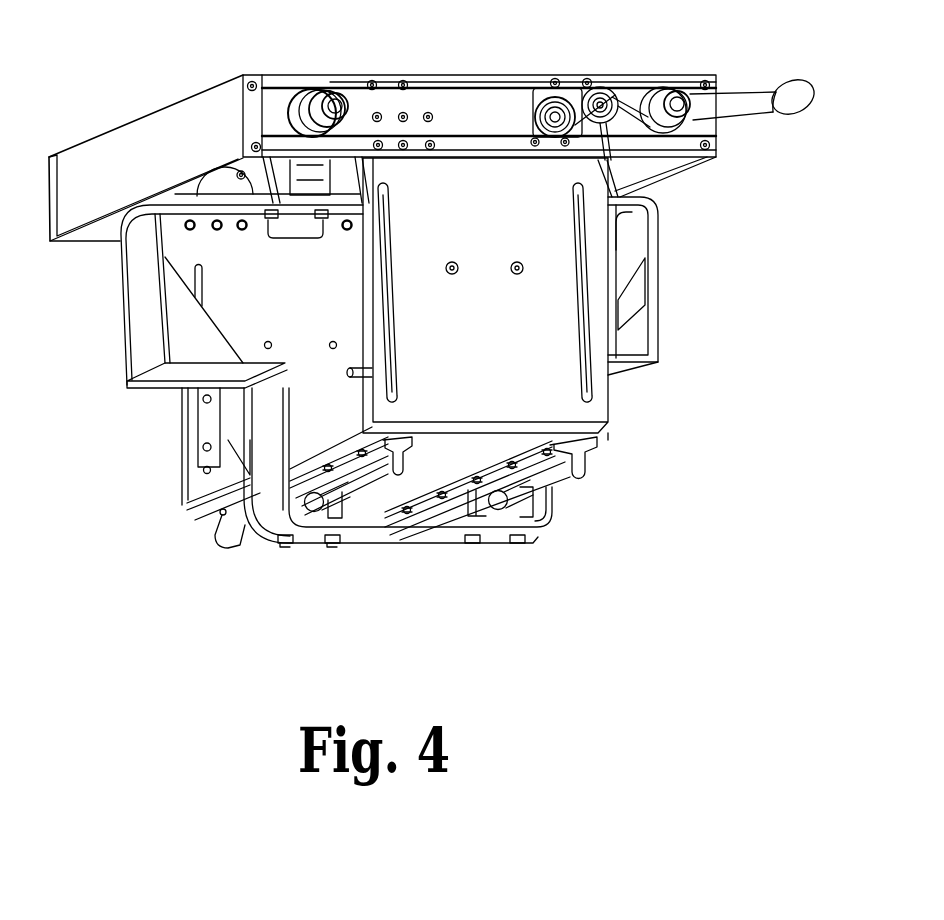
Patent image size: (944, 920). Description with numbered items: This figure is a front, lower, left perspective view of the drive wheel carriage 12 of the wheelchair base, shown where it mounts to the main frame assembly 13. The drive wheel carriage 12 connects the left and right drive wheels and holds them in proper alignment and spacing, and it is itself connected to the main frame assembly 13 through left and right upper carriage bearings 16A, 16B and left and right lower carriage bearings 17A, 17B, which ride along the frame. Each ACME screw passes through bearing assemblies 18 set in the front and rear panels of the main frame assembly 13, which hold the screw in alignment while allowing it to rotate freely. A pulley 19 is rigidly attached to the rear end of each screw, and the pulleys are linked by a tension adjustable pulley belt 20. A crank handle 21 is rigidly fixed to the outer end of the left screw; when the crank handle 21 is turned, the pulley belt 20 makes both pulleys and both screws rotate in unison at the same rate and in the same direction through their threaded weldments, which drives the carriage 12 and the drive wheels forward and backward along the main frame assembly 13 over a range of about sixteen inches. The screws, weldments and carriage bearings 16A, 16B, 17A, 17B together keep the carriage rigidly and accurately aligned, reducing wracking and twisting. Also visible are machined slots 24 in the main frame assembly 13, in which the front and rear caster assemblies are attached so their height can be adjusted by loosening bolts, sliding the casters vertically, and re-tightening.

The drive wheel carriage 12 is at (290, 543).
The main frame assembly 13 is at (102, 135).
The left upper carriage bearing 16A is at (377, 483).
The right upper carriage bearing 16B is at (578, 474).
The left lower carriage bearing 17A is at (323, 513).
The right lower carriage bearing 17B is at (497, 512).
The bearing assemblies 18 is at (297, 91).
The pulley 19 is at (330, 92).
The tension adjustable pulley belt 20 is at (450, 86).
The crank handle 21 is at (750, 92).
The machined slots 24 is at (572, 227).